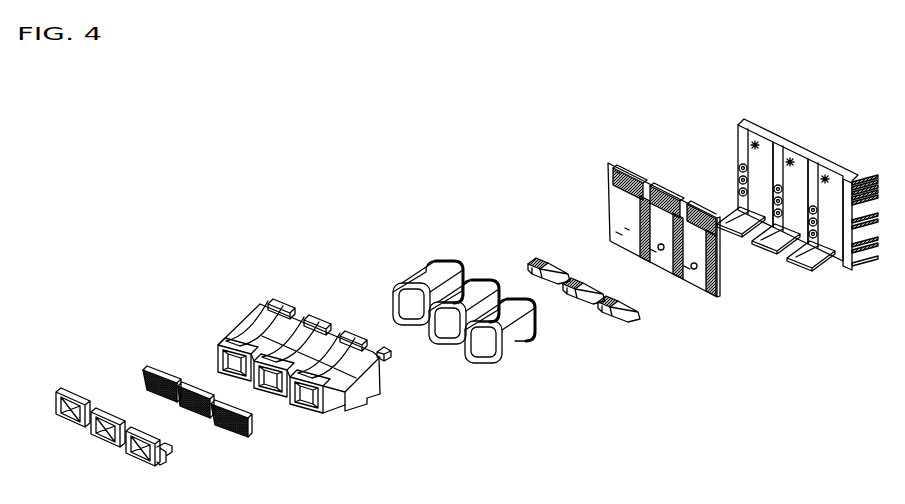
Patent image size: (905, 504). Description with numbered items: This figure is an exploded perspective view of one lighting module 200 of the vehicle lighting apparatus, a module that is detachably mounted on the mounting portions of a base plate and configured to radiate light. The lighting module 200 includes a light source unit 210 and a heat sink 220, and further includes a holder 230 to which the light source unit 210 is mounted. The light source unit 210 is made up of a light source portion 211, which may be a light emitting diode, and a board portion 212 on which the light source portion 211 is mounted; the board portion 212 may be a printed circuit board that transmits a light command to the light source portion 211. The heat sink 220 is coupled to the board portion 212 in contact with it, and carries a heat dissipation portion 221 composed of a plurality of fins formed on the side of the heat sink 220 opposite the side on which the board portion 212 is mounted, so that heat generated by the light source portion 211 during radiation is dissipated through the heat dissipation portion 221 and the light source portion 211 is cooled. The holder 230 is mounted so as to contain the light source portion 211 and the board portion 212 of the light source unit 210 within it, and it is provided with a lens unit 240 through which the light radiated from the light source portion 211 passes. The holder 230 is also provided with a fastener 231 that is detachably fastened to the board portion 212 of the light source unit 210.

The lighting module 200 is at (467, 277).
The light source unit 210 is at (533, 212).
The light source portion 211 is at (630, 228).
The board portion 212 is at (630, 202).
The heat sink 220 is at (841, 278).
The heat dissipation portion 221 is at (847, 172).
The holder 230 is at (265, 325).
The fastener 231 is at (384, 360).
The lens unit 240 is at (152, 367).